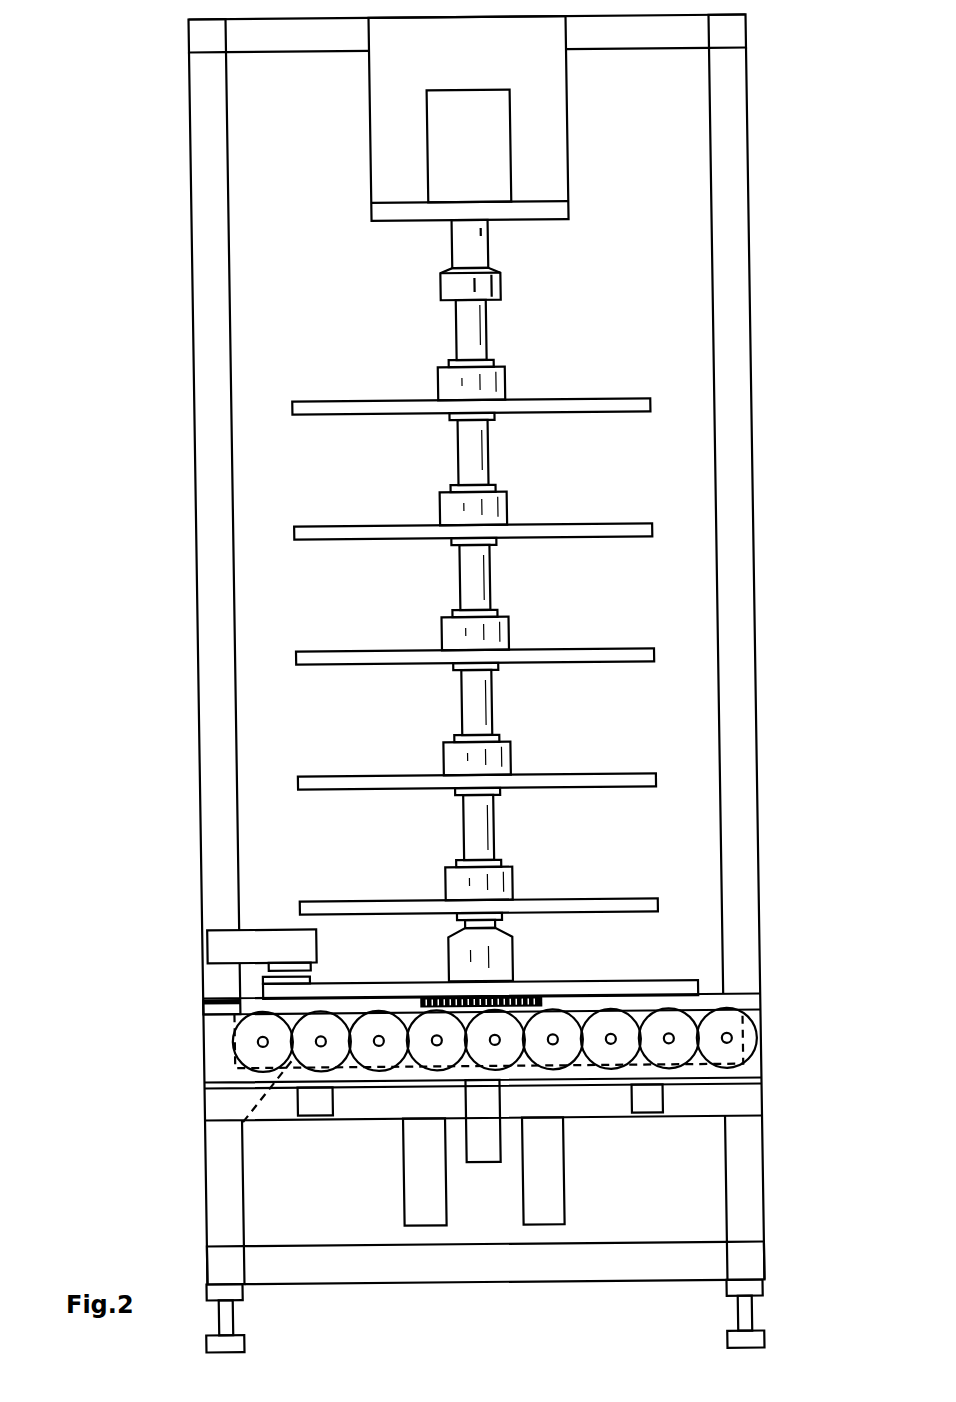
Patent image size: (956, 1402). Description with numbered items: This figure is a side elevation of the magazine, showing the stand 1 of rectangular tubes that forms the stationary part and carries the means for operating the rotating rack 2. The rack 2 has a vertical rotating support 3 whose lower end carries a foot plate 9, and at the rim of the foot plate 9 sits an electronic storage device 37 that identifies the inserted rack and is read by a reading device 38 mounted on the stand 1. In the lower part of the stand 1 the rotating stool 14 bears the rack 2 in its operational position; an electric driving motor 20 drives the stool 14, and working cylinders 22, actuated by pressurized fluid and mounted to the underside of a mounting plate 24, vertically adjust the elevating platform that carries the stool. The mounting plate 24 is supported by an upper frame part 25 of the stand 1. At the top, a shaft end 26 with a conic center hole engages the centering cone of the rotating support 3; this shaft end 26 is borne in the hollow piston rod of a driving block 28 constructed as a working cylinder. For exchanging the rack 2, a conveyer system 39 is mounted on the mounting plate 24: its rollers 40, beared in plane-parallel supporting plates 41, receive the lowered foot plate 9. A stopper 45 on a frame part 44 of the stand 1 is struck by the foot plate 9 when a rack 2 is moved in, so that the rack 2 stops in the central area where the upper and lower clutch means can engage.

The stand 1 is at (192, 339).
The rotating rack 2 is at (526, 460).
The rotating support 3 is at (472, 697).
The foot plate 9 is at (607, 988).
The rotating stool 14 is at (517, 996).
The electric driving motor 20 is at (471, 1143).
The working cylinders 22 is at (519, 1212).
The mounting plate 24 is at (734, 1075).
The upper frame part 25 is at (661, 1099).
The shaft end 26 is at (459, 284).
The driving block 28 is at (506, 145).
The electronic storage device 37 is at (303, 981).
The reading device 38 is at (249, 946).
The conveyer system 39 is at (221, 1037).
The rollers 40 is at (229, 1043).
The supporting plates 41 is at (344, 1061).
The frame part 44 is at (748, 1005).
The stopper 45 is at (243, 1003).